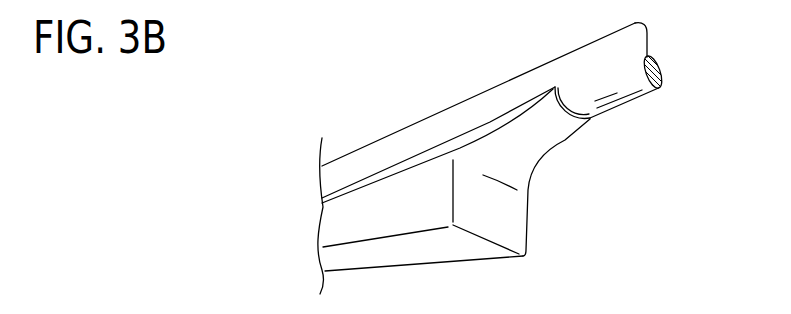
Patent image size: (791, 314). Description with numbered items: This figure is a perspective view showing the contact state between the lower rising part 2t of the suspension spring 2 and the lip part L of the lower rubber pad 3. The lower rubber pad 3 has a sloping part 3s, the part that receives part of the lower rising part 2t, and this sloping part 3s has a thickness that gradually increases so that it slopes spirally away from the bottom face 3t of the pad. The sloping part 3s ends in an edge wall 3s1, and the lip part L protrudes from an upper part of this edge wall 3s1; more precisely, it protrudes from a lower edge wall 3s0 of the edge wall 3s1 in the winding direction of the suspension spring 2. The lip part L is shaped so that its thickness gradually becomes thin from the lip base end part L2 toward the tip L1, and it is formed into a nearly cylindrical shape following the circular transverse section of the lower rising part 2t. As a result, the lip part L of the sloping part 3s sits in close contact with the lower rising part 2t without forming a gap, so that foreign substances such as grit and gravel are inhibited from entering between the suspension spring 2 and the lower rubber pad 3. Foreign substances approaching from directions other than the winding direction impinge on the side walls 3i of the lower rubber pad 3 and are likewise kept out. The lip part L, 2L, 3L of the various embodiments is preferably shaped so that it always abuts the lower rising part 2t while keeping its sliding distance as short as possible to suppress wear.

The suspension spring 2 is at (493, 84).
The lower rising part 2t is at (573, 58).
The lower rubber pad 3 is at (464, 176).
The side walls 3i is at (485, 126).
The sloping part 3s is at (363, 220).
The bottom face 3t is at (407, 253).
The lower edge wall 3s0 is at (497, 225).
The edge wall 3s1 is at (588, 193).
The lip part L is at (596, 187).
The lip part 2L is at (596, 187).
The lip part 3L is at (560, 132).
The tip L1 is at (584, 128).
The lip base end part L2 is at (527, 150).